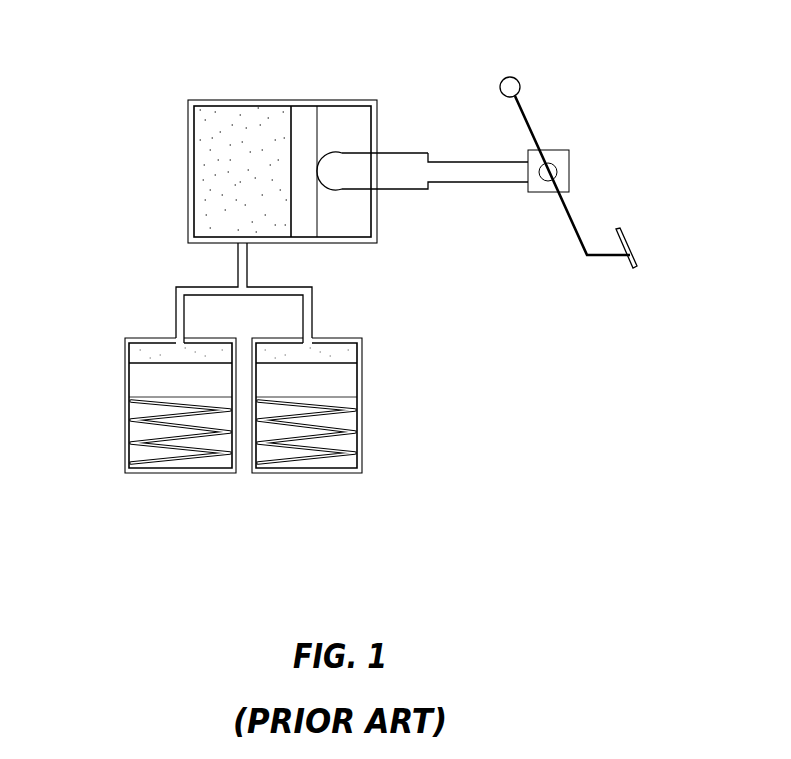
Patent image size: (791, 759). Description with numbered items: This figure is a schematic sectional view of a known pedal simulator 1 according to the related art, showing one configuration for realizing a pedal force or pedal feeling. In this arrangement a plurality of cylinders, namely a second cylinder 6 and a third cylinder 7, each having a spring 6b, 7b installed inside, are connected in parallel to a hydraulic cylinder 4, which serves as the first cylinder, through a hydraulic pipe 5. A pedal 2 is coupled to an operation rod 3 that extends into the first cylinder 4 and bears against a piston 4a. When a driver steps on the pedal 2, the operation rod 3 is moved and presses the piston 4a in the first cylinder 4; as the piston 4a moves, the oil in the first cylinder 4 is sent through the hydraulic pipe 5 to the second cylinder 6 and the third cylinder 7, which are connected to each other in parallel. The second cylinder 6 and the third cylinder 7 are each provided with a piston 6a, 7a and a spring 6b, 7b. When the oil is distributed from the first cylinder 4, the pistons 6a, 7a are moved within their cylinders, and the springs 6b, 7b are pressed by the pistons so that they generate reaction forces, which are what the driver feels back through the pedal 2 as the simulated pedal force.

The pedal simulator 1 is at (546, 98).
The pedal 2 is at (532, 128).
The operation rod 3 is at (475, 184).
The hydraulic cylinder 4 is at (337, 100).
The piston 4a is at (298, 125).
The hydraulic pipe 5 is at (245, 262).
The second cylinder 6 is at (127, 412).
The piston 6a is at (153, 370).
The spring 6b is at (182, 458).
The third cylinder 7 is at (360, 418).
The piston 7a is at (347, 375).
The spring 7b is at (313, 460).